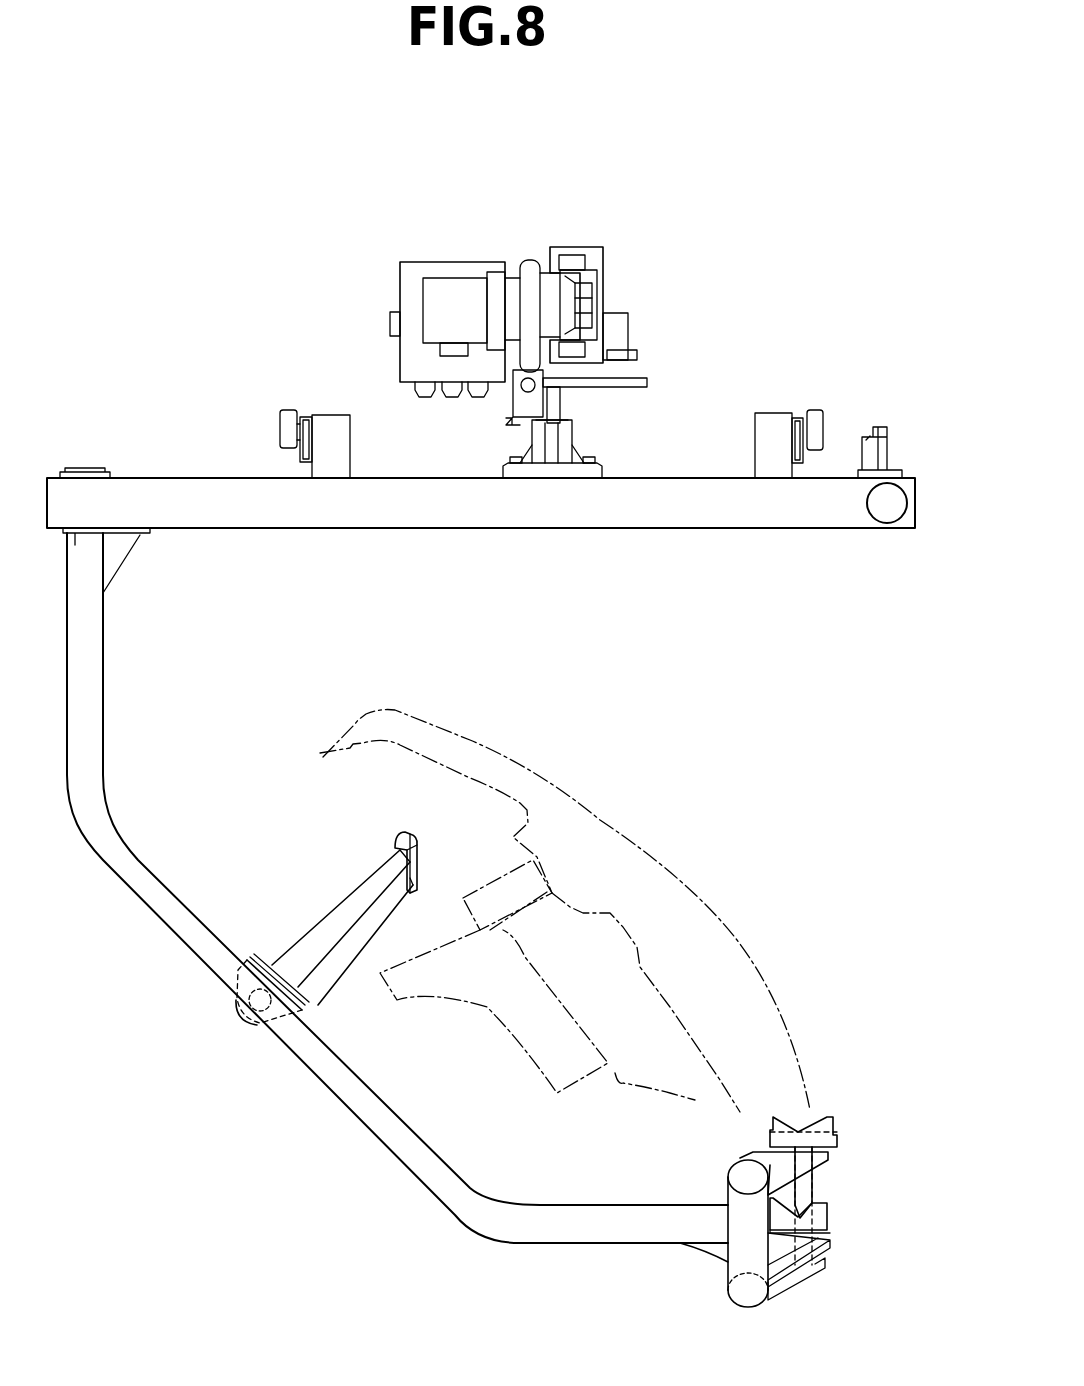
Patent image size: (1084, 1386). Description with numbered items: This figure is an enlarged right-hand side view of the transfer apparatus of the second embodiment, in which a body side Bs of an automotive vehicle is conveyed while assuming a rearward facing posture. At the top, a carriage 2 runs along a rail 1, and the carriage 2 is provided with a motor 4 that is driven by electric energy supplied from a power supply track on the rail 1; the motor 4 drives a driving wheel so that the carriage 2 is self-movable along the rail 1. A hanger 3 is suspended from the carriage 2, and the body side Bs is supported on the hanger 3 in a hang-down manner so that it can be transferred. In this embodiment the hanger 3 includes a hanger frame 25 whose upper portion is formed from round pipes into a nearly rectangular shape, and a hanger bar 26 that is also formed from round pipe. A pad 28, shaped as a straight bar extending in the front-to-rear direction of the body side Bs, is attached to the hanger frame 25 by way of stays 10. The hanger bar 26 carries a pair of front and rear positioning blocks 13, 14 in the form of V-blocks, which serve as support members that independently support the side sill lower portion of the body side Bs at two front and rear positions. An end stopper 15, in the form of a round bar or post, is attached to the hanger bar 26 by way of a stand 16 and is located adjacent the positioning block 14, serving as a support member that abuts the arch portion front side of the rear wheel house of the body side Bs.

The rail 1 is at (585, 245).
The carriage 2 is at (668, 476).
The hanger 3 is at (196, 962).
The motor 4 is at (437, 288).
The stays 10 is at (337, 935).
The positioning block 13 is at (818, 1120).
The positioning block 14 is at (827, 1220).
The end stopper 15 is at (837, 1140).
The stand 16 is at (805, 1187).
The hanger frame 25 is at (298, 1065).
The hanger bar 26 is at (728, 1275).
The pad 28 is at (401, 830).
The body side Bs is at (638, 838).